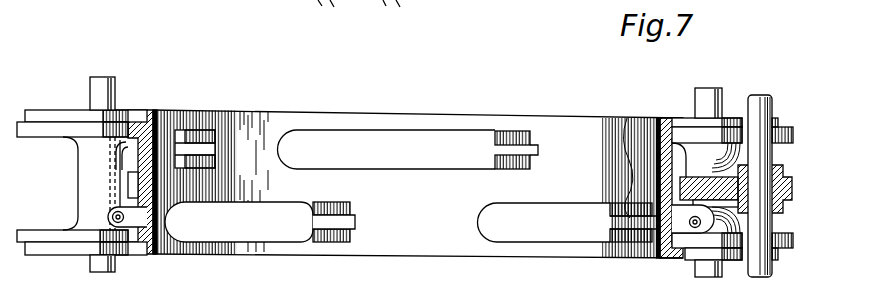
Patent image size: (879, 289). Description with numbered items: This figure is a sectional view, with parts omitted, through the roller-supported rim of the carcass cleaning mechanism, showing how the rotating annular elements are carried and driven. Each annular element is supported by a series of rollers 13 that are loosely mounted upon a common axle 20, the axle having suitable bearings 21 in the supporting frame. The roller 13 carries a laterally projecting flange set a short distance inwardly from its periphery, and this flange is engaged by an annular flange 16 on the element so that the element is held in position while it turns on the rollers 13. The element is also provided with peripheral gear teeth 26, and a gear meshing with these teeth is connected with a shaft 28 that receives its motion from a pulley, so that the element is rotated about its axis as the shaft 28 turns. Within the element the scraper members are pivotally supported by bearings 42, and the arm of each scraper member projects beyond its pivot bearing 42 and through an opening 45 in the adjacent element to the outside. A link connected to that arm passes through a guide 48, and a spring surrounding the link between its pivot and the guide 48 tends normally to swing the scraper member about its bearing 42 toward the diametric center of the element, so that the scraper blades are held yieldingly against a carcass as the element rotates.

The roller 13 is at (85, 223).
The annular flange 16 is at (130, 118).
The axle 20 is at (95, 100).
The bearing 21 is at (670, 233).
The peripheral gear teeth 26 is at (133, 185).
The shaft 28 is at (777, 90).
The bearing 42 is at (195, 135).
The opening 45 is at (438, 140).
The guide 48 is at (148, 253).